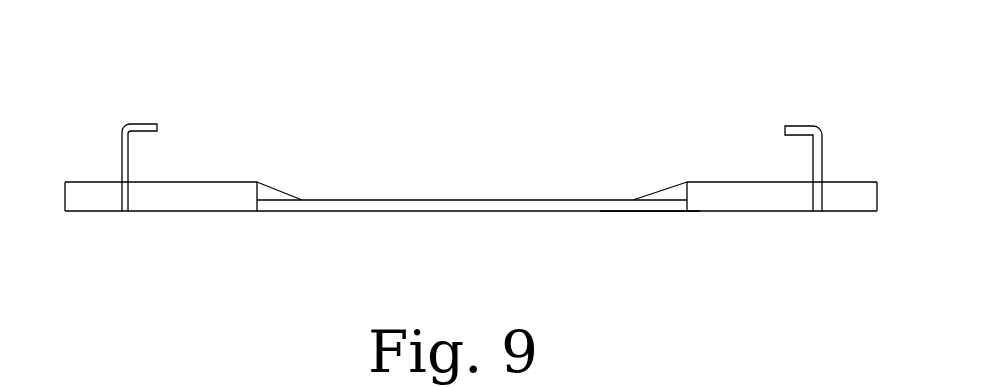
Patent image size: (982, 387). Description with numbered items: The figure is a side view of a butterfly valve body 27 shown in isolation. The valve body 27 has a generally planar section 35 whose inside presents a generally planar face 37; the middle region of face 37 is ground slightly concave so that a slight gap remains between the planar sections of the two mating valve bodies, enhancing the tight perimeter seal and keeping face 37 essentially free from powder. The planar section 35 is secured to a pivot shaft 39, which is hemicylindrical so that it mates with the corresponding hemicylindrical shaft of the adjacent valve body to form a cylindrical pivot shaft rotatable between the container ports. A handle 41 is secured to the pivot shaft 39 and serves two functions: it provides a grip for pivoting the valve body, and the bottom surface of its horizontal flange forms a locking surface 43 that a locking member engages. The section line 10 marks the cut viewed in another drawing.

The section line 10- 10 is at (223, 148).
The valve body 27 is at (660, 86).
The planar section 35 is at (568, 198).
The planar face 37 is at (658, 212).
The pivot shaft 39 is at (238, 193).
The handle 41 is at (120, 165).
The locking surface 43 is at (145, 133).